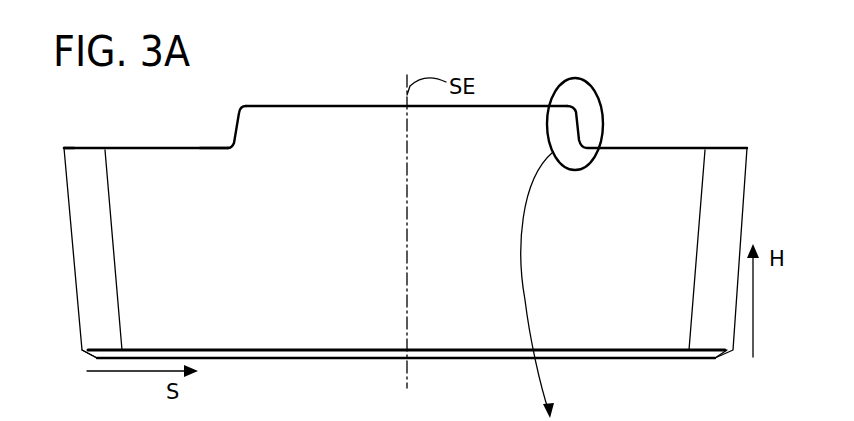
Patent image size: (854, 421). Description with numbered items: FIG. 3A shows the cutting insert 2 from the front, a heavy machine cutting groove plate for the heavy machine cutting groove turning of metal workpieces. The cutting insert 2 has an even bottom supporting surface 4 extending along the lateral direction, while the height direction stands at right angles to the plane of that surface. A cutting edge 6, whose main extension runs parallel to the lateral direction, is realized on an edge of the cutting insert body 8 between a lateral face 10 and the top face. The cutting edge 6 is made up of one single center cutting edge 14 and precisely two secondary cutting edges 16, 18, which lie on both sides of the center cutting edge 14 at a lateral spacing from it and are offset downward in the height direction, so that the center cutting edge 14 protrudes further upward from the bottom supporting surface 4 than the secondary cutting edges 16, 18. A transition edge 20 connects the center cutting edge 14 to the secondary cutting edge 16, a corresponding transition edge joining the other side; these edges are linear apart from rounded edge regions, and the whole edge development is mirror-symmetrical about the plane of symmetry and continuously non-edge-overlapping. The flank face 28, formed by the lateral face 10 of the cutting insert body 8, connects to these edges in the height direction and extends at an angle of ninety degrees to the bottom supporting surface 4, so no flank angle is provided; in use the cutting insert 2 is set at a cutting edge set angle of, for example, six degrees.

The cutting insert 2 is at (684, 99).
The bottom supporting surface 4 is at (320, 360).
The cutting edge 6 is at (340, 130).
The cutting insert body 8 is at (157, 154).
The lateral face 10 is at (287, 328).
The center cutting edge 14 is at (327, 106).
The secondary cutting edge 16 is at (200, 148).
The secondary cutting edge 18 is at (636, 148).
The transition edge 20 is at (236, 128).
The flank face 28 is at (466, 250).